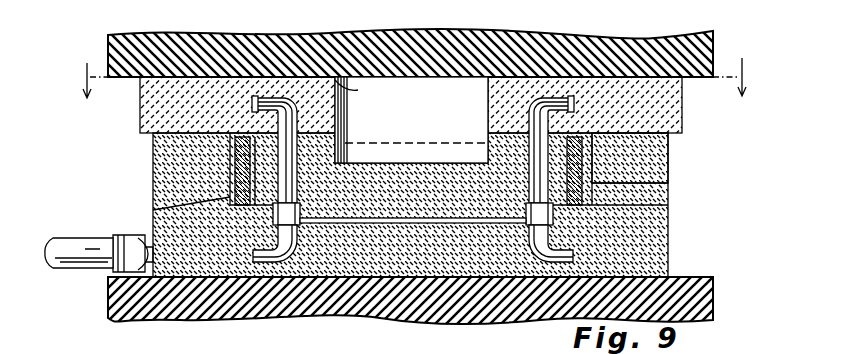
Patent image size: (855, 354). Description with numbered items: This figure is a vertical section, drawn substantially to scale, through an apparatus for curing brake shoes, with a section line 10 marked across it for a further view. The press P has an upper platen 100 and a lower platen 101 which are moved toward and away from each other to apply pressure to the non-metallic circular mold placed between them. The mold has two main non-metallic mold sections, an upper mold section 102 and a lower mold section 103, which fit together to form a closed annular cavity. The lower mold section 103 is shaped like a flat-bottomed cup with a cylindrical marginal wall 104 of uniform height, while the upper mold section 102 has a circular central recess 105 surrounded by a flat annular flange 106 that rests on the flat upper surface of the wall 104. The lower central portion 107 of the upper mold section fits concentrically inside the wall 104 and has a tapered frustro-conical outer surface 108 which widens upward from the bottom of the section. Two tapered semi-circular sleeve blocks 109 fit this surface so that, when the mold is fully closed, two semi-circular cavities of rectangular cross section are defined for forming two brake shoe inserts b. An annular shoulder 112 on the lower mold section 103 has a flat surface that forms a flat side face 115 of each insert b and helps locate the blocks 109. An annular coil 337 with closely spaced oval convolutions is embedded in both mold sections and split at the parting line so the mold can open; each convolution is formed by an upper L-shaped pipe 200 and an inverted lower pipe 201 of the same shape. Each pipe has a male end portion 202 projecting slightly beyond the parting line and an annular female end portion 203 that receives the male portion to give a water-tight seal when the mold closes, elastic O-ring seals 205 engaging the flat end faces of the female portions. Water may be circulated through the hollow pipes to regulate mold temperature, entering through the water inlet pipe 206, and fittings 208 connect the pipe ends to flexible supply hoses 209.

The section line 10- 10 is at (416, 79).
The upper platen 100 is at (405, 61).
The lower platen 101 is at (449, 263).
The upper mold section 102 is at (683, 117).
The lower mold section 103 is at (413, 205).
The cylindrical marginal wall 104 is at (668, 165).
The circular central recess 105 is at (372, 77).
The flat annular flange 106 is at (636, 77).
The lower central portion 107 is at (404, 178).
The tapered frustro-conical outer surface 108 is at (538, 187).
The sleeve block 109 is at (530, 202).
The annular shoulder 112 is at (490, 252).
The flat side face 115 is at (412, 152).
The upper L-shaped pipe 200 is at (320, 138).
The lower pipe 201 is at (749, 278).
The male end portion 202 is at (520, 258).
The annular female end portion 203 is at (153, 161).
The elastic O-ring seal 205 is at (425, 302).
The water inlet pipe 206 is at (199, 302).
The fitting 208 is at (93, 262).
The flexible supply hose 209 is at (122, 238).
The annular coil 337 is at (338, 95).
The brake shoe insert b is at (155, 210).
The press P is at (141, 151).